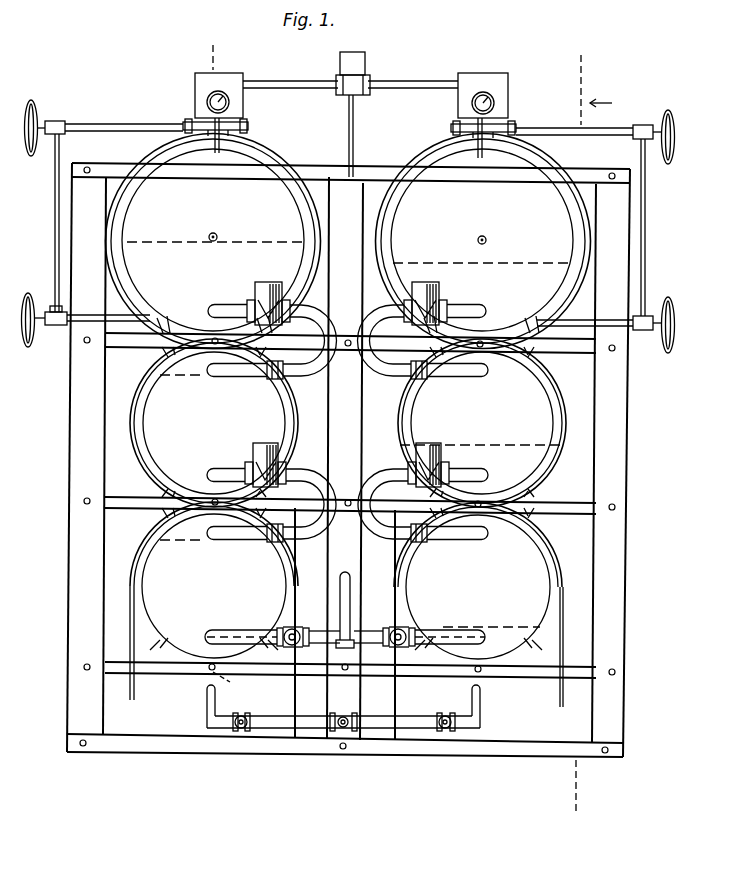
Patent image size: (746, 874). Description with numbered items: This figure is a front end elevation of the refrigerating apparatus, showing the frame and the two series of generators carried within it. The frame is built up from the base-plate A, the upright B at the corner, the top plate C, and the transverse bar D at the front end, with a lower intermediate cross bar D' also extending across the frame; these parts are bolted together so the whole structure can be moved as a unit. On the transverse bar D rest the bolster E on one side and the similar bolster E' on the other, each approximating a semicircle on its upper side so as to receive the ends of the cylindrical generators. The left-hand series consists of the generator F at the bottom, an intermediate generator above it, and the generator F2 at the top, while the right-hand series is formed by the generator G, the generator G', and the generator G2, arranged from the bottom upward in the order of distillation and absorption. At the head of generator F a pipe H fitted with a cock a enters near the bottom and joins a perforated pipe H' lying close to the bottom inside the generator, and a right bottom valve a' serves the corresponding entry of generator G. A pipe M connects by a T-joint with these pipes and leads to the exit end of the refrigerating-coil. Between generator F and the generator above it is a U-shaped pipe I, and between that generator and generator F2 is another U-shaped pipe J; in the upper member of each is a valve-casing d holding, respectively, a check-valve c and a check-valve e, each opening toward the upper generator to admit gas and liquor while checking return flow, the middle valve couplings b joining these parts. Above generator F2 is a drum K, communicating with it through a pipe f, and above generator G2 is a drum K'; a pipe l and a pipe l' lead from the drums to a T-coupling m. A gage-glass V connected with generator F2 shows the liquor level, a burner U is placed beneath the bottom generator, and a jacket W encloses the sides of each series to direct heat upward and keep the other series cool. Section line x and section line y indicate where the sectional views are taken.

The base-plate A is at (153, 742).
The upright B is at (72, 553).
The top plate C is at (304, 168).
The transverse bar D is at (349, 349).
The lower intermediate cross bar D' is at (349, 513).
The generator F2 is at (125, 258).
The generator G2 is at (576, 240).
The jacket W is at (133, 405).
The generator G' is at (487, 423).
The generator F is at (143, 583).
The generator G is at (481, 605).
The bolster E is at (215, 473).
The bolster E' is at (481, 494).
The valve-casing d is at (268, 283).
The check-valve e is at (258, 288).
The check-valve c is at (253, 465).
The middle valve couplings b is at (281, 463).
The U-shaped pipe J is at (357, 370).
The U-shaped pipe I is at (352, 528).
The pipe H is at (241, 626).
The perforated pipe H' is at (450, 623).
The cock a is at (308, 624).
The right bottom valve a' is at (384, 624).
The pipe M is at (337, 580).
The burner U is at (337, 708).
The drum K is at (207, 95).
The drum K' is at (494, 95).
The pipe f is at (229, 137).
The pipe l is at (290, 93).
The pipe l' is at (413, 93).
The T-coupling m is at (340, 94).
The gage-glass V is at (348, 226).
The section line x is at (588, 437).
The section line y is at (222, 358).